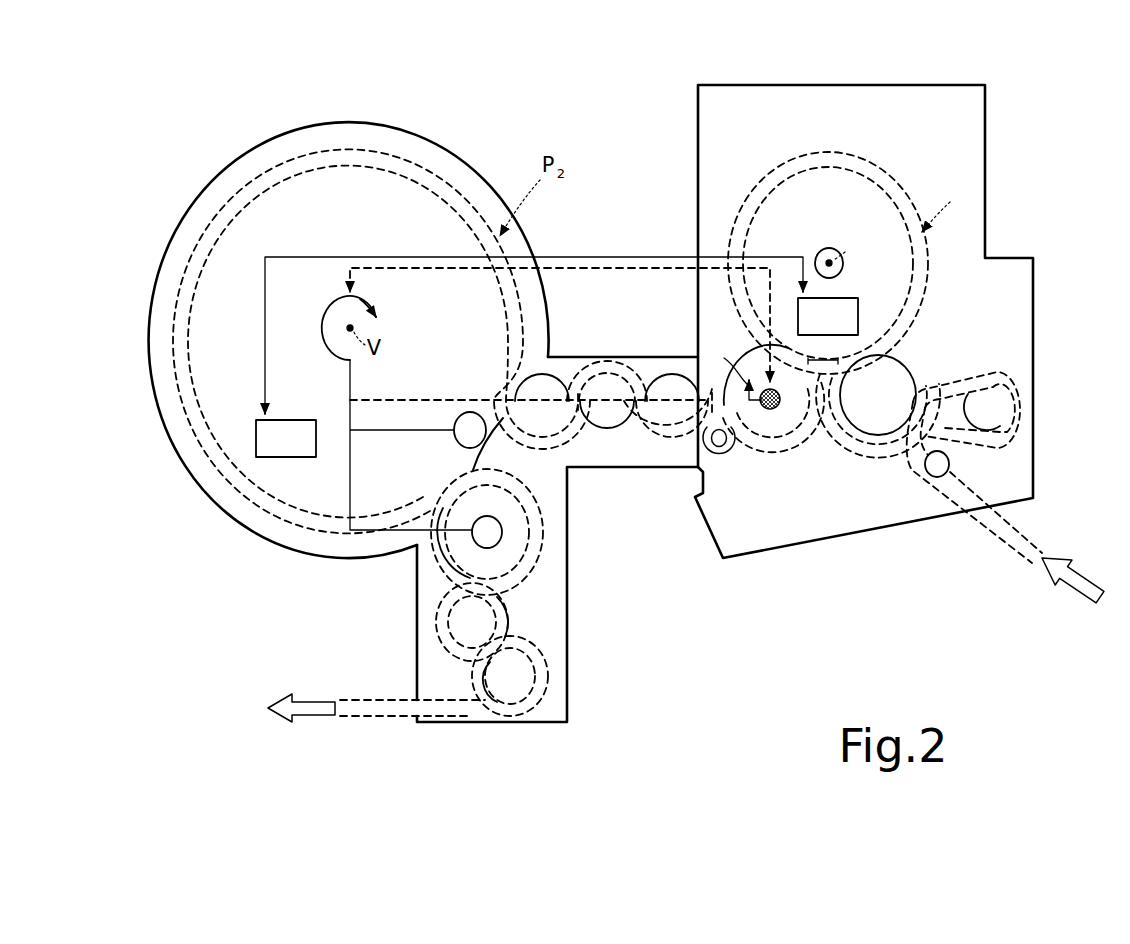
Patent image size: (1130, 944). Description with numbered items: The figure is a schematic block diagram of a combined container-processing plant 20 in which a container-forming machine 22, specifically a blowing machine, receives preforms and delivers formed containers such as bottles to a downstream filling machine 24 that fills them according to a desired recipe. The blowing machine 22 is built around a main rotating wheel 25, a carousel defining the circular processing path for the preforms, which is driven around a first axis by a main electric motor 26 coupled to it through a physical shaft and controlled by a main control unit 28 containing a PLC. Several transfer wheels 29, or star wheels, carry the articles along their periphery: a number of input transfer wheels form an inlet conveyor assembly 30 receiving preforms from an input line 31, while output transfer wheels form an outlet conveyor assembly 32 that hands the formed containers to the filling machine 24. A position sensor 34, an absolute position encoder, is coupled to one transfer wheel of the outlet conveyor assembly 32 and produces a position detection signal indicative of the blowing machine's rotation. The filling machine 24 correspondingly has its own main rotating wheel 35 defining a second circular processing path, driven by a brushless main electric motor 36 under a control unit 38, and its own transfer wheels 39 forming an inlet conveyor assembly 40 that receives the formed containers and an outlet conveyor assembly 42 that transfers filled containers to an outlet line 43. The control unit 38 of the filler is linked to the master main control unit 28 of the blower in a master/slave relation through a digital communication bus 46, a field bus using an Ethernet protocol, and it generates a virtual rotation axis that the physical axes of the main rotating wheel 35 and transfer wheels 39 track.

The container-processing plant 20 is at (156, 131).
The container-forming machine 22 is at (1025, 145).
The filling machine 24 is at (472, 138).
The main rotating wheel 25 is at (843, 203).
The main electric motor 26 is at (822, 251).
The main control unit 28 is at (862, 318).
The transfer wheels 29 is at (800, 412).
The inlet conveyor assembly 30 is at (875, 415).
The input line 31 is at (953, 512).
The outlet conveyor assembly 32 is at (738, 475).
The position sensor 34 is at (776, 412).
The main rotating wheel 35 is at (250, 167).
The main electric motor 36 is at (470, 436).
The control unit 38 is at (263, 455).
The transfer wheels 39 is at (670, 425).
The inlet conveyor assembly 40 is at (578, 462).
The outlet conveyor assembly 42 is at (428, 638).
The outlet line 43 is at (385, 714).
The digital communication bus 46 is at (612, 255).